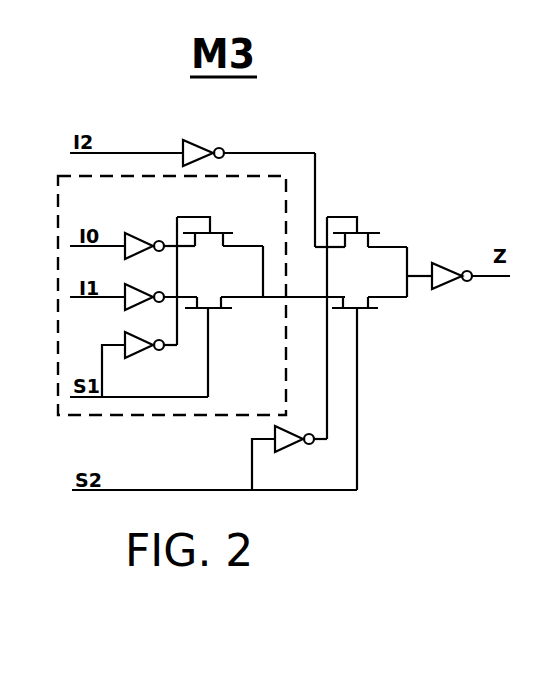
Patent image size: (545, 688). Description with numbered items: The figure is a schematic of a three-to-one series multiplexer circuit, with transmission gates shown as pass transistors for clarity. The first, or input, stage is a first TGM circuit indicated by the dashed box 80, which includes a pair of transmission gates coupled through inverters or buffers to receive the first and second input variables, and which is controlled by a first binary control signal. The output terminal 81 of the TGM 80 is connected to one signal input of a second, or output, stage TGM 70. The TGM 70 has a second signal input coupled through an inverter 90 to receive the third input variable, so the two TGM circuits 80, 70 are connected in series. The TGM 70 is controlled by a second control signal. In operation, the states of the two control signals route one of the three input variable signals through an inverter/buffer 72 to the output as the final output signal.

The inverter 90 is at (211, 151).
The first TGM circuit 80 is at (287, 178).
The output terminal 81 is at (278, 299).
The second stage TGM 70 is at (366, 258).
The inverter/buffer 72 is at (452, 268).